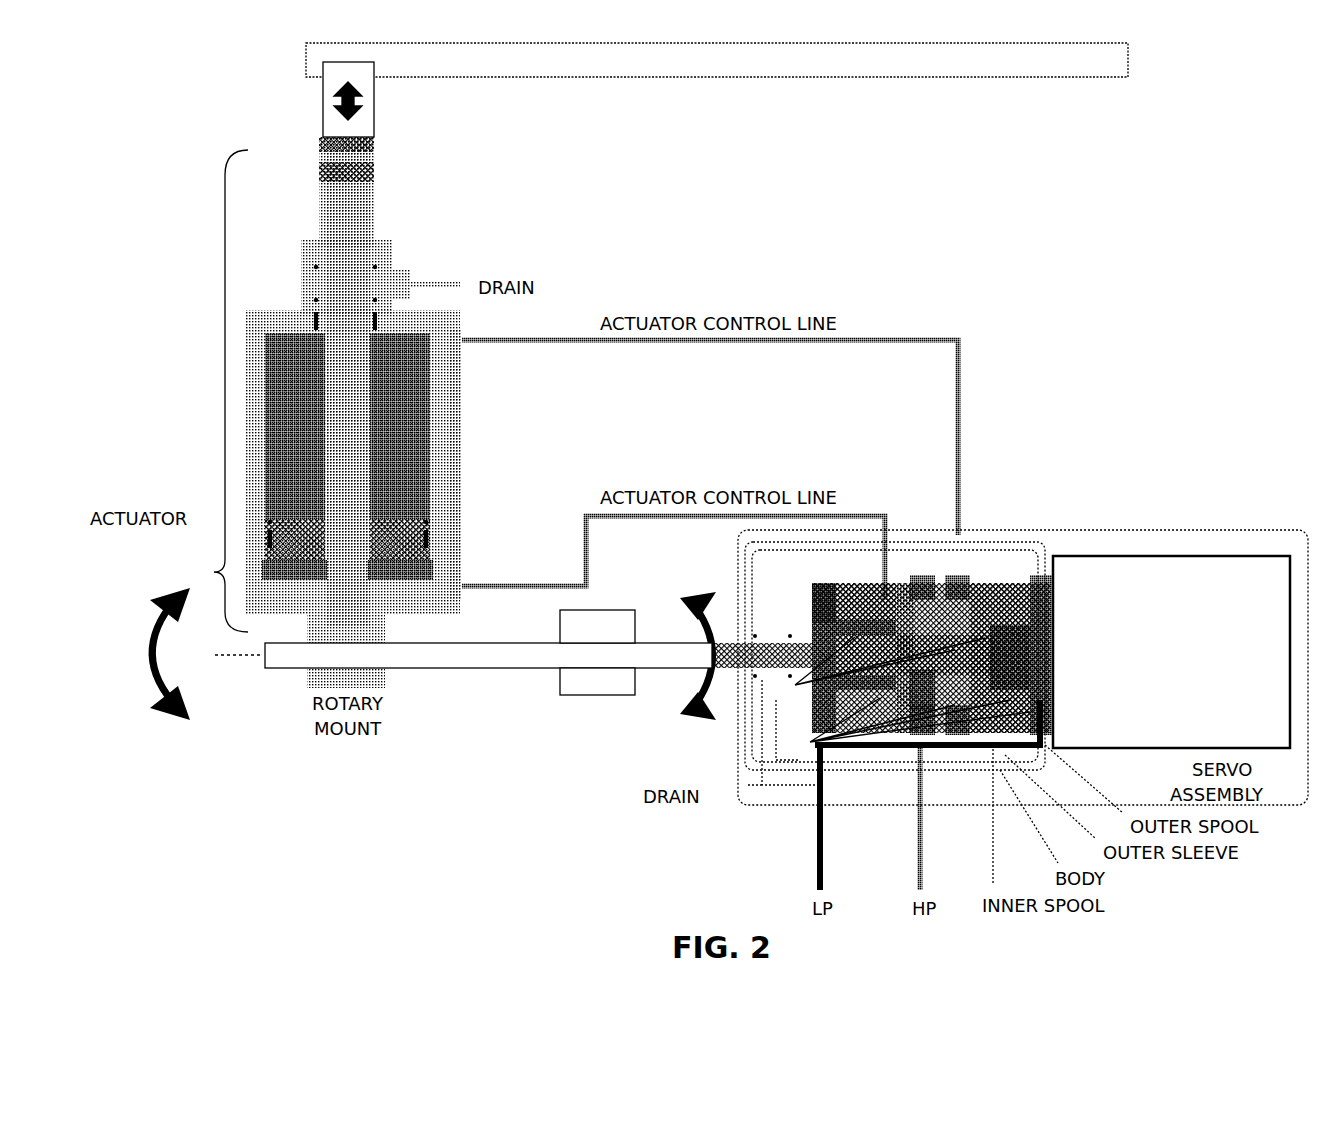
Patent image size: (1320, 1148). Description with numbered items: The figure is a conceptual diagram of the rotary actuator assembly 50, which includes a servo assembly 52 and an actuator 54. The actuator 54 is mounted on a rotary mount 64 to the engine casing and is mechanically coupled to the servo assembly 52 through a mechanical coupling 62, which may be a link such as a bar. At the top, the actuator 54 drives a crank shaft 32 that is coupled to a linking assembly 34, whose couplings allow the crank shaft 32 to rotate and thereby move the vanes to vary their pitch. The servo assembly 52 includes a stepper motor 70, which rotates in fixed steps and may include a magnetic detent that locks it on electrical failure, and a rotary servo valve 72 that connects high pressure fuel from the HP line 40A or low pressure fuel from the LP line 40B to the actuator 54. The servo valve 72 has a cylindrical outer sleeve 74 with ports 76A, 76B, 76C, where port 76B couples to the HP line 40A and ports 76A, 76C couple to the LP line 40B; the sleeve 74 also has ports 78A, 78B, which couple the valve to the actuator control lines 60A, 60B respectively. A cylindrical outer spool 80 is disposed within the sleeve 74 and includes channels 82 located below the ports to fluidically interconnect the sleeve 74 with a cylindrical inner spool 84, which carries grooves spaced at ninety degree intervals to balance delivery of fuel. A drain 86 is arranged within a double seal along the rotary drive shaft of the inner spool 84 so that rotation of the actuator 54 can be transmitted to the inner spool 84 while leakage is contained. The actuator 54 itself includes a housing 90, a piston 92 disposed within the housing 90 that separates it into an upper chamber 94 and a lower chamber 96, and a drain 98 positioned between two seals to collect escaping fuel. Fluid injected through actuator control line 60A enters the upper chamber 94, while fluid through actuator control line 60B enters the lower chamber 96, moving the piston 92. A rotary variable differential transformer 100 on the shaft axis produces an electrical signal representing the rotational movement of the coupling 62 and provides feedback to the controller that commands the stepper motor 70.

The crank shaft 32 is at (1113, 66).
The linking assembly 34 is at (330, 94).
The rotary actuator assembly 50 is at (1242, 145).
The servo assembly 52 is at (1208, 528).
The actuator 54 is at (210, 391).
The actuator control line 60A is at (960, 425).
The actuator control line 60B is at (870, 505).
The mechanical coupling 62 is at (522, 666).
The rotary mount 64 is at (312, 688).
The stepper motor 70 is at (1171, 652).
The servo valve 72 is at (805, 635).
The cylindrical outer sleeve 74 is at (985, 590).
The port 76A is at (818, 590).
The port 76B is at (922, 585).
The port 76C is at (1040, 590).
The port 78A is at (962, 590).
The port 78B is at (880, 582).
The cylindrical outer spool 80 is at (855, 612).
The channels 82 is at (911, 731).
The cylindrical inner spool 84 is at (812, 612).
The drain 86 is at (706, 783).
The housing 90 is at (302, 323).
The piston 92 is at (410, 532).
The upper chamber 94 is at (410, 430).
The lower chamber 96 is at (410, 575).
The drain 98 is at (432, 282).
The rotary variable differential transformer 100 is at (596, 696).
The HP line 40A is at (922, 880).
The LP line 40B is at (818, 878).